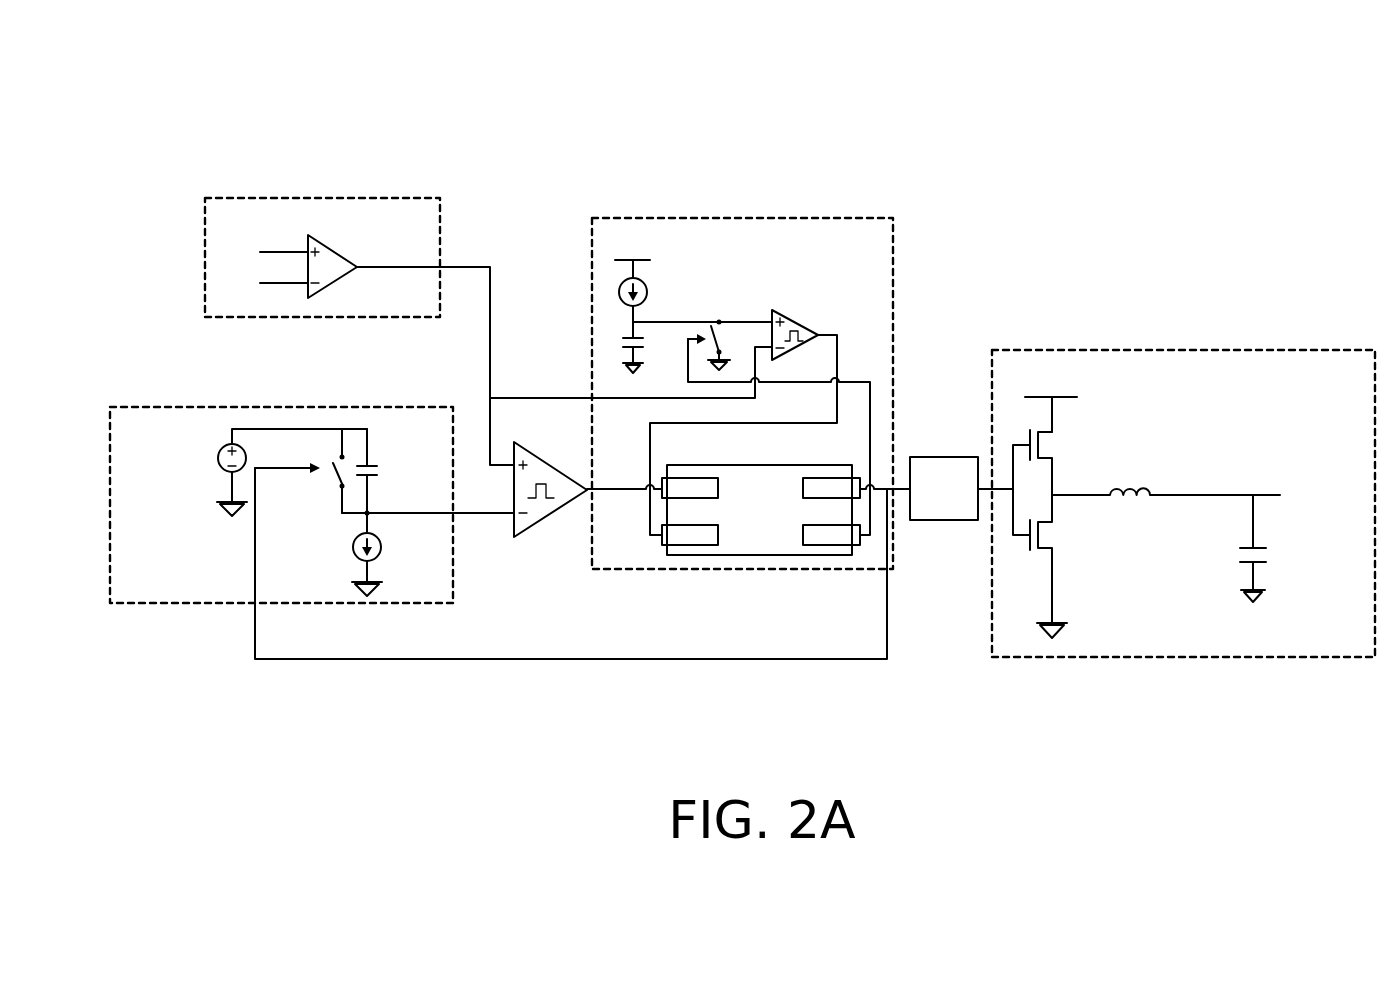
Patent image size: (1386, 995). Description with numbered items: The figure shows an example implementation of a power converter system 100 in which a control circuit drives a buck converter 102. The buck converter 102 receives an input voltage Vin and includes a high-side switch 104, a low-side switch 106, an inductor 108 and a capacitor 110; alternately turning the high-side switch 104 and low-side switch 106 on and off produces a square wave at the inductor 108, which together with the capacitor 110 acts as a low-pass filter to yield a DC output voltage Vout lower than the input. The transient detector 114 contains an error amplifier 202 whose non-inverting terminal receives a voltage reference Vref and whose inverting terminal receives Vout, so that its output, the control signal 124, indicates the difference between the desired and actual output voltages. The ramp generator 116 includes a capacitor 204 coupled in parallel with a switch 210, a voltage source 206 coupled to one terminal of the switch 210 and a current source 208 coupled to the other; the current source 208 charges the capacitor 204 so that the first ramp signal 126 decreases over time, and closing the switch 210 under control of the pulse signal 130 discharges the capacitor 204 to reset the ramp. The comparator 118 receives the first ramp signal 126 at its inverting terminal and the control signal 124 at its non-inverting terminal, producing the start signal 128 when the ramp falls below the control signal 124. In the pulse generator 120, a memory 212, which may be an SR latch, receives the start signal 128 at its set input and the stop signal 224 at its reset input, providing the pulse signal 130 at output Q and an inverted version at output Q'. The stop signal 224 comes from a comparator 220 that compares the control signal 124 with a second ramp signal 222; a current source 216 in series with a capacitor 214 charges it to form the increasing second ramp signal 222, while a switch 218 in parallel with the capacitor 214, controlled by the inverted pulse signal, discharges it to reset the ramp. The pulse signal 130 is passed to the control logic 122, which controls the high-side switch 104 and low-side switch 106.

The power converter system 100 is at (1166, 84).
The buck converter 102 is at (1145, 350).
The high-side switch 104 is at (1062, 445).
The low-side switch 106 is at (1062, 533).
The inductor 108 is at (1130, 480).
The capacitor 110 is at (1238, 548).
The transient detector 114 is at (272, 198).
The ramp generator 116 is at (127, 407).
The comparator 118 is at (528, 525).
The pulse generator 120 is at (663, 218).
The control logic 122 is at (961, 488).
The control signal 124 is at (448, 266).
The first ramp signal 126 is at (473, 516).
The start signal 128 is at (612, 493).
The pulse signal 130 is at (788, 660).
The error amplifier 202 is at (333, 248).
The capacitor 204 is at (376, 467).
The voltage source 206 is at (215, 452).
The current source 208 is at (353, 553).
The switch 210 is at (335, 485).
The memory 212 is at (761, 510).
The capacitor 214 is at (625, 350).
The current source 216 is at (643, 280).
The switch 218 is at (719, 321).
The comparator 220 is at (793, 316).
The second ramp signal 222 is at (633, 320).
The stop signal 224 is at (838, 360).